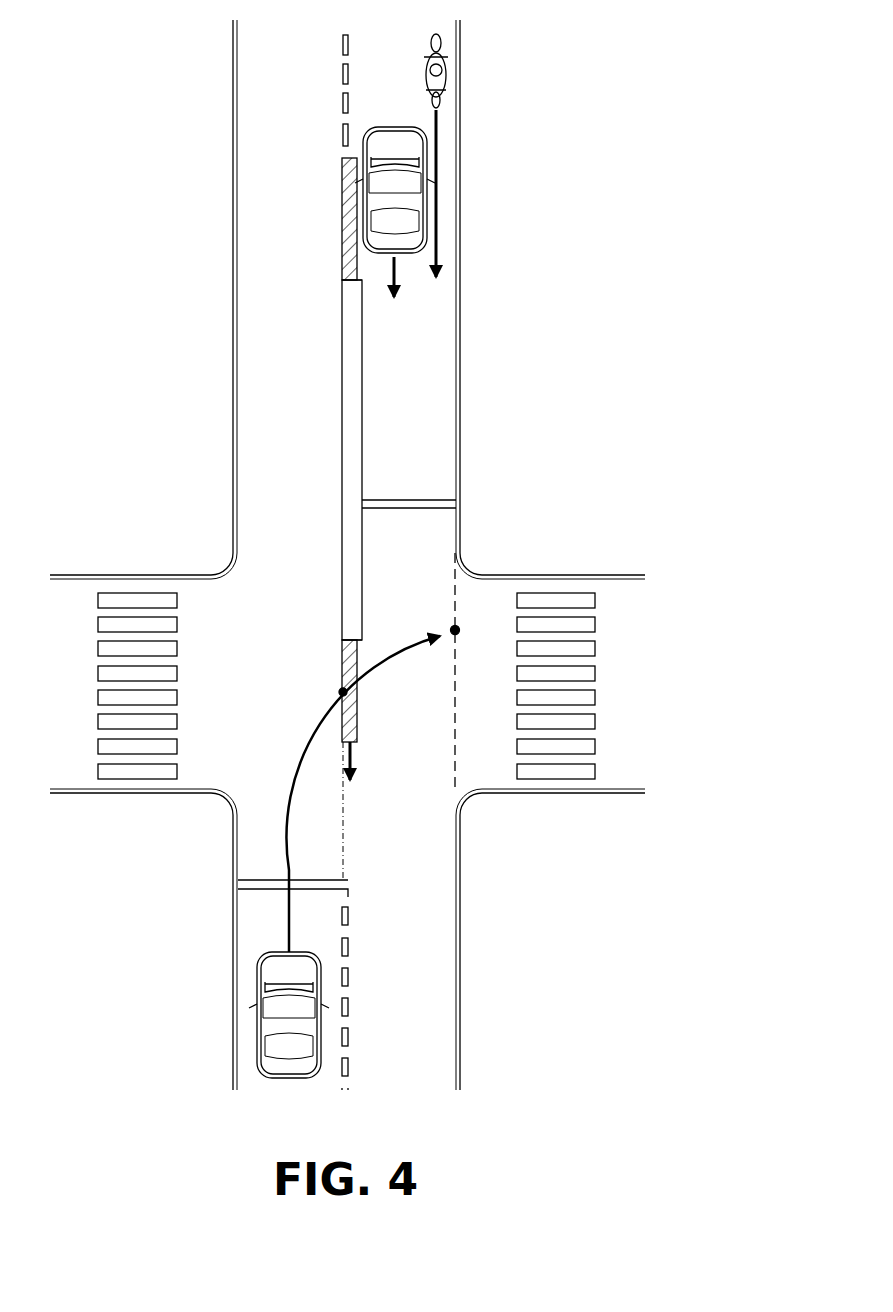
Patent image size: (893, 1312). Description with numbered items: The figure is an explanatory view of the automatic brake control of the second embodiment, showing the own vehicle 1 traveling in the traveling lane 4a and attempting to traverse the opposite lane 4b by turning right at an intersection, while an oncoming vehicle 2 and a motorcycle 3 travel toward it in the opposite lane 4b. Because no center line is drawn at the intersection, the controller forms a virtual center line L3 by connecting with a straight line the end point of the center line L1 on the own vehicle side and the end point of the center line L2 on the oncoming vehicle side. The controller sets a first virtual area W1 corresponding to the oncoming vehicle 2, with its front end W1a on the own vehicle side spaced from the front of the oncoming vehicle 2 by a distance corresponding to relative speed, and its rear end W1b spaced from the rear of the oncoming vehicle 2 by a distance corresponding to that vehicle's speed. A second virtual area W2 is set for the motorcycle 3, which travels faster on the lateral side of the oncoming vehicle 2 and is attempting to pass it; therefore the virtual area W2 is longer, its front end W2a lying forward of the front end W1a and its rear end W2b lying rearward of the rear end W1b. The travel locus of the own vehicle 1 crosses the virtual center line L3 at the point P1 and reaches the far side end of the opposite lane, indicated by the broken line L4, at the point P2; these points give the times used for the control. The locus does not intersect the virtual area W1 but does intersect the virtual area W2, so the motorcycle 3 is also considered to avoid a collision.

The own vehicle 1 is at (256, 1018).
The oncoming vehicle 2 is at (393, 122).
The motorcycle 3 is at (453, 56).
The traveling lane 4a is at (282, 67).
The opposite lane 4b is at (412, 385).
The center line L1 is at (350, 1010).
The center line L2 is at (342, 103).
The virtual center line L3 is at (345, 848).
The broken line L4 is at (457, 686).
The virtual area W1 is at (340, 455).
The front end of virtual area W1 W1a is at (342, 641).
The rear end of virtual area W1 W1b is at (342, 280).
The virtual area W2 is at (360, 718).
The front end of virtual area W2 W2a is at (355, 745).
The rear end of virtual area W2 W2b is at (342, 158).
The point P1 is at (341, 690).
The point P2 is at (453, 628).